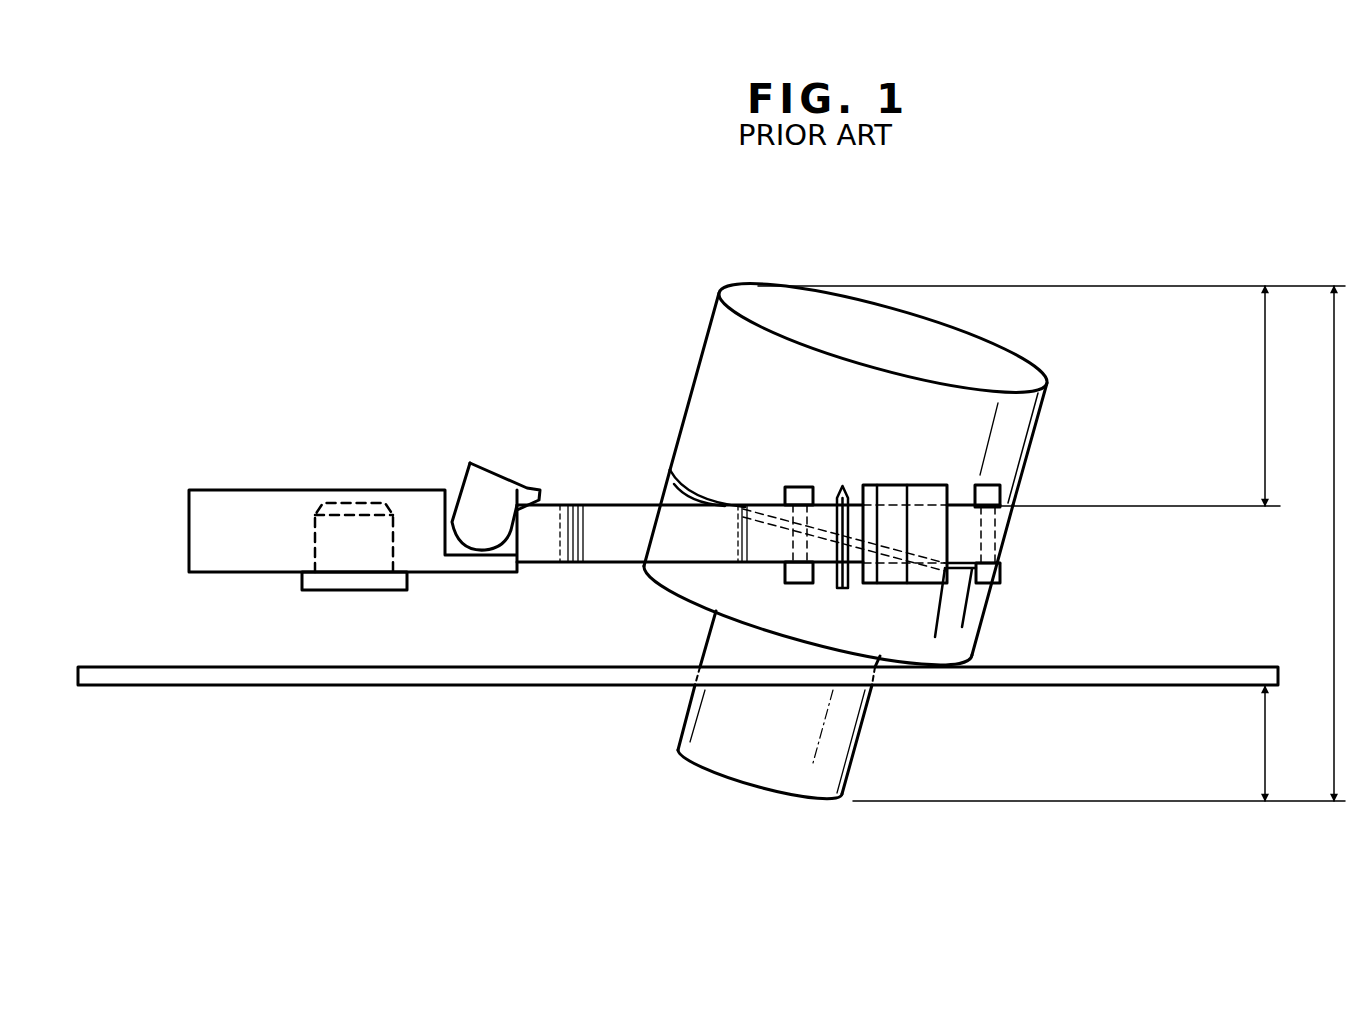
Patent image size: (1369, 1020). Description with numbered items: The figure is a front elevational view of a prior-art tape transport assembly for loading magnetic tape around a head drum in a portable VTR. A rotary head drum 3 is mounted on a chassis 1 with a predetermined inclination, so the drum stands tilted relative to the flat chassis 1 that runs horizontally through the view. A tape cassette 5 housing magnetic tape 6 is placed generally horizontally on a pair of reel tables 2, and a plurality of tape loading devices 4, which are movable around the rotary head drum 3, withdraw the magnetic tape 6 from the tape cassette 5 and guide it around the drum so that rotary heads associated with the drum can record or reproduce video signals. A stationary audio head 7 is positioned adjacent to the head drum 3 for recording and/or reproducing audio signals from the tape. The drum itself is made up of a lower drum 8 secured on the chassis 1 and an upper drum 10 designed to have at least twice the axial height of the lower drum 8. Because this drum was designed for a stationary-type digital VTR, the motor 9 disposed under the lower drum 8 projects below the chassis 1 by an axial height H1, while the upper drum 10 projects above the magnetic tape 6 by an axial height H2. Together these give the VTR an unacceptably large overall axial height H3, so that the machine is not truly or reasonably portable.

The chassis 1 is at (515, 686).
The reel tables 2 is at (350, 533).
The rotary head drum 3 is at (846, 425).
The tape loading devices 4 is at (992, 478).
The tape cassette 5 is at (235, 507).
The magnetic tape 6 is at (603, 517).
The stationary audio head 7 is at (893, 583).
The lower drum 8 is at (960, 625).
The motor 9 is at (730, 755).
The upper drum 10 is at (733, 357).
The axial height H1 is at (1265, 731).
The axial height H2 is at (1265, 398).
The axial height H3 is at (1334, 549).